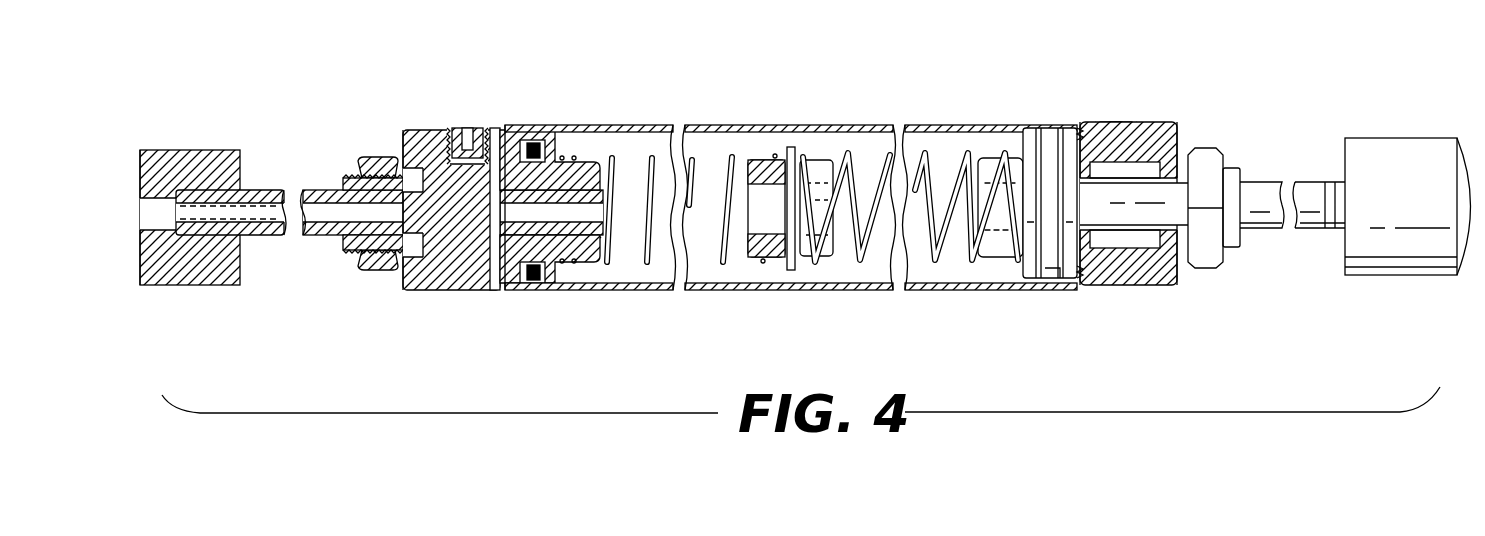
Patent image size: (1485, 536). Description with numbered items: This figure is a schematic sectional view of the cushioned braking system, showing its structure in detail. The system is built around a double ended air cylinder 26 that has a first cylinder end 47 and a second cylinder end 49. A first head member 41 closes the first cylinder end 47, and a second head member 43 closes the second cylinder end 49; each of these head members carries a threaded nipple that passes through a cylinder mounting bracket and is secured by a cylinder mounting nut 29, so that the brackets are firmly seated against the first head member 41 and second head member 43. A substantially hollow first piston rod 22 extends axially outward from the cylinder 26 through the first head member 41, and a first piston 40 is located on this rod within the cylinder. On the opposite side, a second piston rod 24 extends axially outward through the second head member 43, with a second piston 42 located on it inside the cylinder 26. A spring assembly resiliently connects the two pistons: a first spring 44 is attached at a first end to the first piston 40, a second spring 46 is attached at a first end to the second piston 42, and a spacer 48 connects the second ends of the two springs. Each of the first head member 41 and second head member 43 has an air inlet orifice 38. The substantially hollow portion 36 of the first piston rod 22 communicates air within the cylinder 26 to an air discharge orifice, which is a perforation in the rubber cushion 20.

The rubber cushion 20 is at (199, 168).
The first piston rod 22 is at (275, 190).
The second piston rod 24 is at (1263, 185).
The cylinder 26 is at (906, 292).
The cylinder mounting nut 29 is at (373, 157).
The substantially hollow portion 36 is at (283, 214).
The air inlet orifice 38 is at (468, 128).
The first piston 40 is at (556, 130).
The first head member 41 is at (428, 292).
The second piston 42 is at (1046, 282).
The second head member 43 is at (1151, 290).
The first spring 44 is at (722, 160).
The second spring 46 is at (948, 155).
The first cylinder end 47 is at (501, 287).
The spacer 48 is at (820, 165).
The second cylinder end 49 is at (1083, 285).